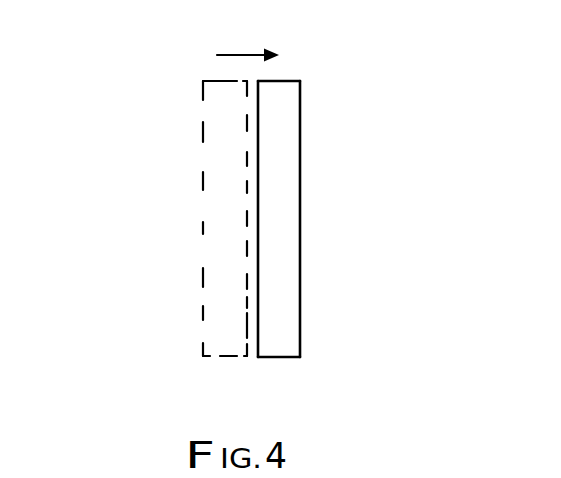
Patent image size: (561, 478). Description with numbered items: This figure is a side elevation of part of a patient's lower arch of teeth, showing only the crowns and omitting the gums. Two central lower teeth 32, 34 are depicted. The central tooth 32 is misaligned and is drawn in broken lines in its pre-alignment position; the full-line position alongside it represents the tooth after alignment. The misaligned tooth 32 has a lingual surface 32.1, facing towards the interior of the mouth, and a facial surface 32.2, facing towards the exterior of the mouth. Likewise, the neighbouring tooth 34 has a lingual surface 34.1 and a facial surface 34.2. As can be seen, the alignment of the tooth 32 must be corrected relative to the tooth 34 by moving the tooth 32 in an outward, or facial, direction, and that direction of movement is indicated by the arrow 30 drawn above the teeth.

The direction of movement 30 is at (240, 55).
The central tooth 32 is at (215, 257).
The lingual surface 32.1 is at (204, 182).
The facial surface 32.2 is at (247, 157).
The central lower tooth 34 is at (290, 259).
The lingual surface 34.1 is at (259, 318).
The facial surface 34.2 is at (302, 213).